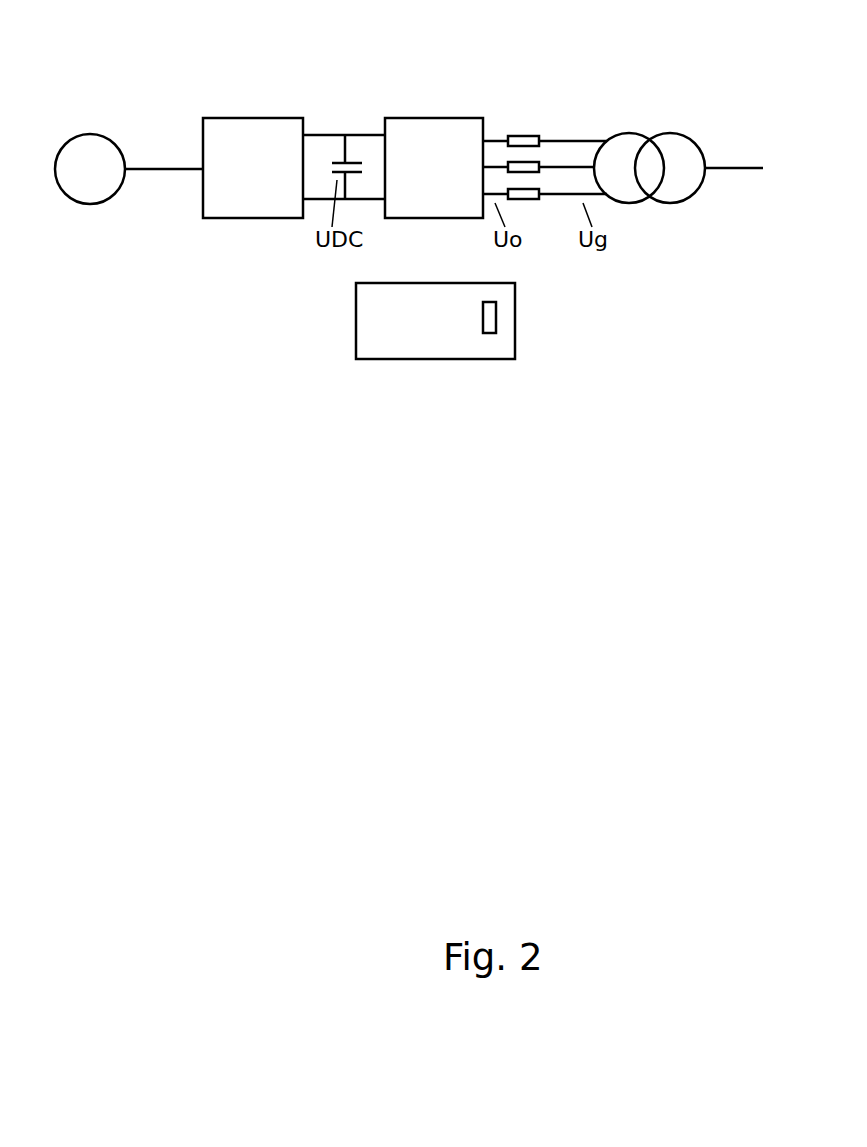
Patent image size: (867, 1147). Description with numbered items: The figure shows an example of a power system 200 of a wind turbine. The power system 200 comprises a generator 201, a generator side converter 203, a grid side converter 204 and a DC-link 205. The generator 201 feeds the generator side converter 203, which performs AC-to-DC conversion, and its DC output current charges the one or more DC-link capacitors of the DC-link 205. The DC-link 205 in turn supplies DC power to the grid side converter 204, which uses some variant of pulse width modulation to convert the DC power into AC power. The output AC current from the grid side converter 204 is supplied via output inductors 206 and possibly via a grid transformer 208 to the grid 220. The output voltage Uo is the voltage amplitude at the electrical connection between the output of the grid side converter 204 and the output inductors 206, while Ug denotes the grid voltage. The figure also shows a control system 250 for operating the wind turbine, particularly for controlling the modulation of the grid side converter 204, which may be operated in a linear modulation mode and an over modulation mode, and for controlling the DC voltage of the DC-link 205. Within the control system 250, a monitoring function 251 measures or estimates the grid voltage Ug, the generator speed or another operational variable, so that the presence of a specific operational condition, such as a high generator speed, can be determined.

The power system 200 is at (229, 50).
The generator 201 is at (78, 132).
The generator side converter 203 is at (247, 105).
The grid side converter 204 is at (433, 105).
The DC-link 205 is at (355, 155).
The output inductors 206 is at (518, 133).
The grid transformer 208 is at (642, 130).
The grid 220 is at (747, 160).
The control system 250 is at (437, 367).
The monitoring function 251 is at (495, 328).